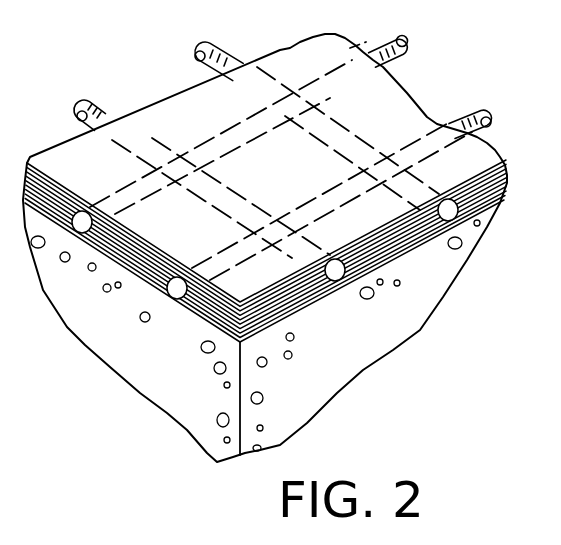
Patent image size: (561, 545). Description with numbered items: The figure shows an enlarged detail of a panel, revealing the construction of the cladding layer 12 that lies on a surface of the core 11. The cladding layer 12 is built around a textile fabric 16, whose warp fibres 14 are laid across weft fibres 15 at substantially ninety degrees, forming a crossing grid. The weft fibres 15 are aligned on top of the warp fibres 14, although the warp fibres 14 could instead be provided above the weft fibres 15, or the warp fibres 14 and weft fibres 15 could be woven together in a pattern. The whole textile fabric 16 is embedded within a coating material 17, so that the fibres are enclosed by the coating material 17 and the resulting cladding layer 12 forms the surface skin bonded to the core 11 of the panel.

The core 11 is at (383, 380).
The cladding layer 12 is at (462, 239).
The warp fibres 14 is at (350, 75).
The weft fibres 15 is at (142, 132).
The textile fabric 16 is at (290, 103).
The coating material 17 is at (378, 281).